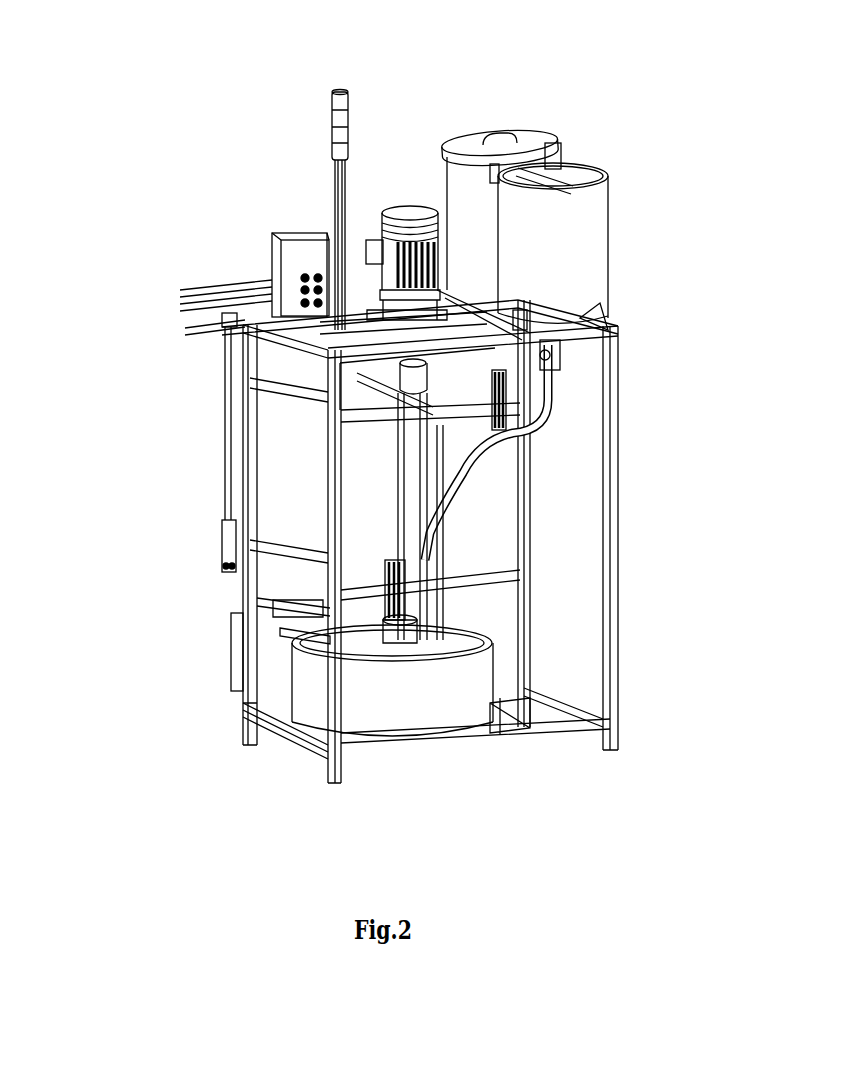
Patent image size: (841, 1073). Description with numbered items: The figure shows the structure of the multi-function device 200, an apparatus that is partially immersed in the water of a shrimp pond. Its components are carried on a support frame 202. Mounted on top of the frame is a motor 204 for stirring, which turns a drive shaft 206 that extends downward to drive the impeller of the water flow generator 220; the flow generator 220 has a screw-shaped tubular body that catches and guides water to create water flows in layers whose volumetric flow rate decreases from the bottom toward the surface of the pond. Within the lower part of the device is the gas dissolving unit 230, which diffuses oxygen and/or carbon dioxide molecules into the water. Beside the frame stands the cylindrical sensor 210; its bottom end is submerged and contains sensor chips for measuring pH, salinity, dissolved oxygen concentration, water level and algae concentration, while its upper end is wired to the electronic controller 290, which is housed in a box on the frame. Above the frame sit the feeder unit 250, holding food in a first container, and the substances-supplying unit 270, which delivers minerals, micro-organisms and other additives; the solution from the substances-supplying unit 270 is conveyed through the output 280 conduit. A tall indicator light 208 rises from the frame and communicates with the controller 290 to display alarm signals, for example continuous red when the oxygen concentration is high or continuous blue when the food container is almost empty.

The multi-function device 200 is at (255, 133).
The support frame 202 is at (620, 527).
The motor 204 is at (418, 210).
The drive shaft 206 is at (397, 500).
The indicator light 208 is at (333, 130).
The sensor 210 is at (230, 545).
The water flow generator 220 is at (410, 690).
The gas dissolving unit 230 is at (390, 565).
The feeder unit 250 is at (533, 142).
The substances-supplying unit 270 is at (607, 217).
The output 280 is at (500, 700).
The controller 290 is at (272, 257).